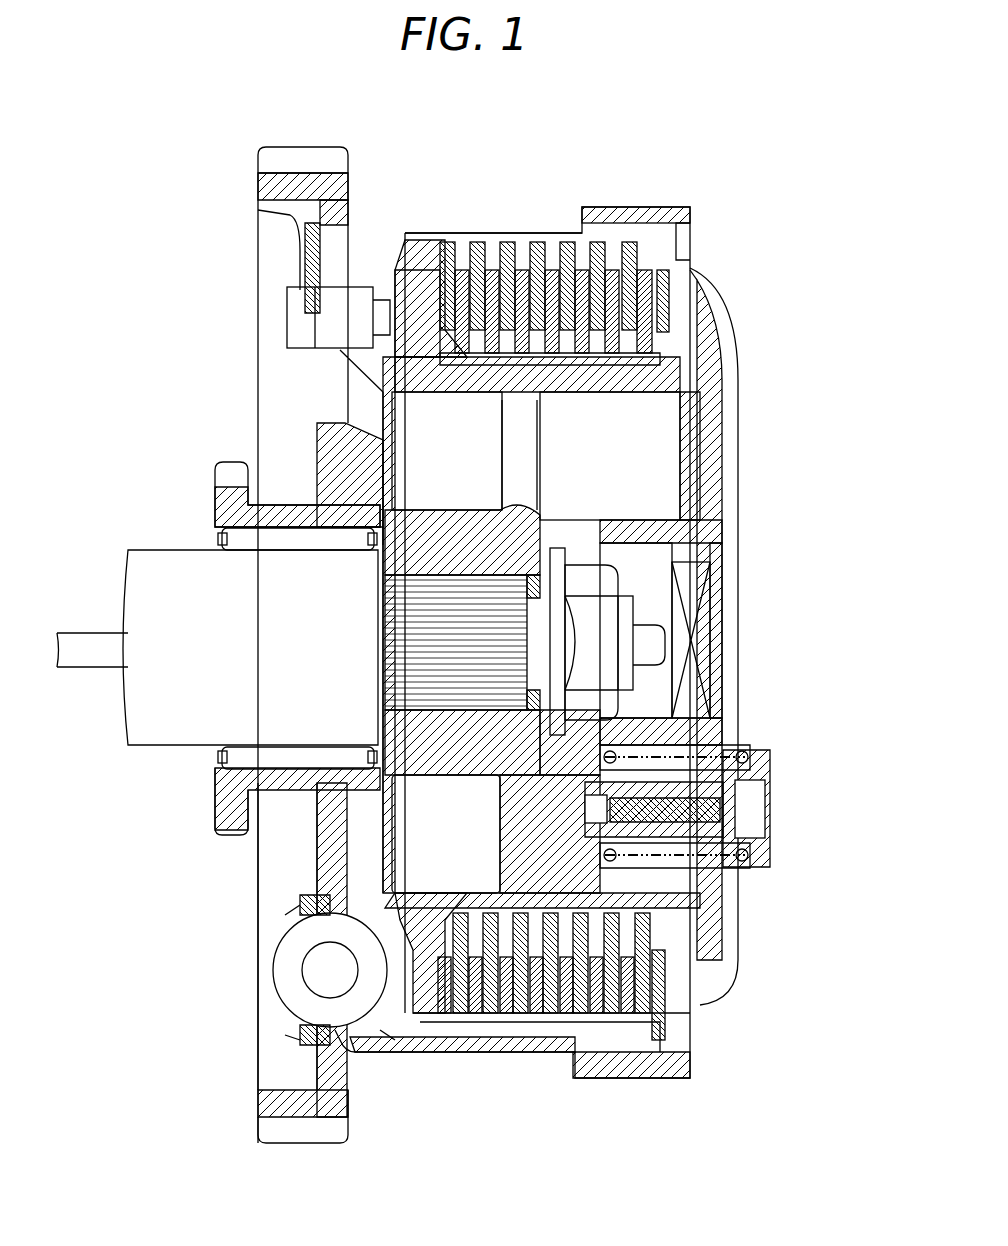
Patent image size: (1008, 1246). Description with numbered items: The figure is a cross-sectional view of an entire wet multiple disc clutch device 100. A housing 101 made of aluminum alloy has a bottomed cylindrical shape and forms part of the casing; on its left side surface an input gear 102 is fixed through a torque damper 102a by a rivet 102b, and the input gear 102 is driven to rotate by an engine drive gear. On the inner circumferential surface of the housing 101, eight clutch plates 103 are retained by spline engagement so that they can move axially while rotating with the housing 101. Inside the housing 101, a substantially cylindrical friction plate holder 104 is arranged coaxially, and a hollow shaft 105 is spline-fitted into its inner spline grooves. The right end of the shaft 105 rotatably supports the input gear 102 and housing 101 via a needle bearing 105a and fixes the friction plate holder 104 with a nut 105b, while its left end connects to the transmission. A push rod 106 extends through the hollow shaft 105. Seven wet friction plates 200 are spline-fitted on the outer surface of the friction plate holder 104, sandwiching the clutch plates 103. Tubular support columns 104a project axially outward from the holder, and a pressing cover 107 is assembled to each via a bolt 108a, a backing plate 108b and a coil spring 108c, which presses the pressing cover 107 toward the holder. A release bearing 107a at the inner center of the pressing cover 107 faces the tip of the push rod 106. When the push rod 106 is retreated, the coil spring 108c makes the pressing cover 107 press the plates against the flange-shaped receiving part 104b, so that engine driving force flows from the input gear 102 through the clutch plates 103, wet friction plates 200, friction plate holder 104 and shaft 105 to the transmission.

The wet multiple disc clutch device 100 is at (618, 151).
The housing 101 is at (432, 1055).
The input gear 102 is at (305, 148).
The torque damper 102a is at (275, 970).
The rivet 102b is at (290, 327).
The clutch plate 103 is at (535, 240).
The friction plate holder 104 is at (608, 395).
The tubular support column 104a is at (580, 775).
The receiving part 104b is at (401, 300).
The shaft 105 is at (146, 548).
The needle bearing 105a is at (215, 752).
The nut 105b is at (577, 555).
The push rod 106 is at (642, 628).
The pressing cover 107 is at (722, 428).
The release bearing 107a is at (712, 618).
The bolt 108a is at (770, 808).
The backing plate 108b is at (770, 855).
The coil spring 108c is at (750, 757).
The wet friction plate 200 is at (460, 275).